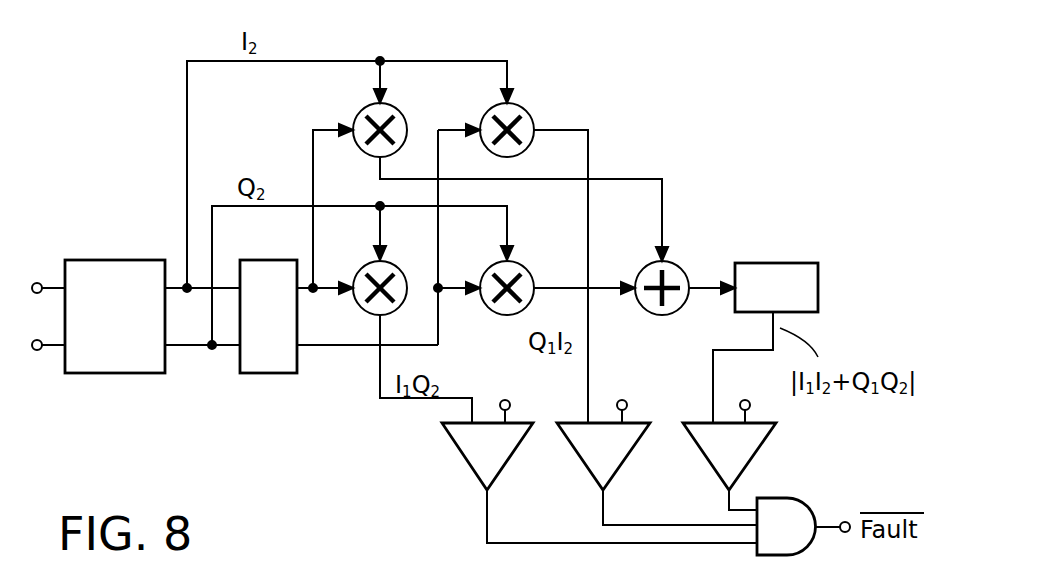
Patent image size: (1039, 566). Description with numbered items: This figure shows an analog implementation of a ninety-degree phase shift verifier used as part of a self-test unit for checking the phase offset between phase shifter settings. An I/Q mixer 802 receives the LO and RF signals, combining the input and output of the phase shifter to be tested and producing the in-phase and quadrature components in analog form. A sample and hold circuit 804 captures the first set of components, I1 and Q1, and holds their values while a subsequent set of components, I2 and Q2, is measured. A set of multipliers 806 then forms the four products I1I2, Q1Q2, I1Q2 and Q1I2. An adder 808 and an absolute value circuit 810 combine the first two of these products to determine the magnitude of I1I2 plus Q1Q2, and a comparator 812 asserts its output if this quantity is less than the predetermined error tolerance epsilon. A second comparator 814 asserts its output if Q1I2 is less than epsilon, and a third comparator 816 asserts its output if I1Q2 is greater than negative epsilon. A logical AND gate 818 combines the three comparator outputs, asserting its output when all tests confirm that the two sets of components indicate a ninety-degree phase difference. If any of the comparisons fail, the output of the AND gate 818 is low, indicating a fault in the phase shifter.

The I/Q mixer 802 is at (84, 258).
The sample and hold circuit 804 is at (273, 377).
The set of multipliers 806 is at (507, 50).
The adder 808 is at (678, 264).
The absolute value circuit 810 is at (782, 262).
The comparator 812 is at (705, 460).
The second comparator 814 is at (582, 460).
The third comparator 816 is at (466, 460).
The logical AND gate 818 is at (780, 497).